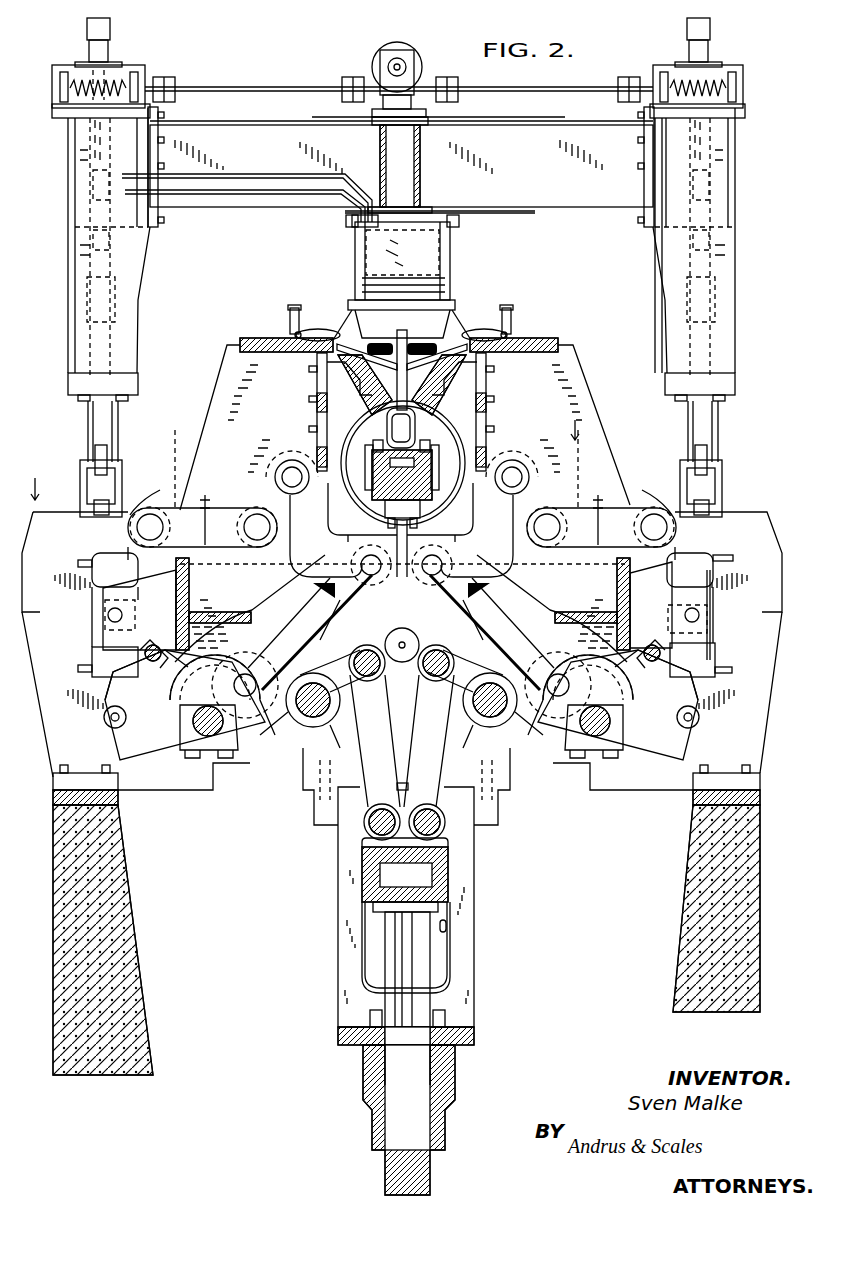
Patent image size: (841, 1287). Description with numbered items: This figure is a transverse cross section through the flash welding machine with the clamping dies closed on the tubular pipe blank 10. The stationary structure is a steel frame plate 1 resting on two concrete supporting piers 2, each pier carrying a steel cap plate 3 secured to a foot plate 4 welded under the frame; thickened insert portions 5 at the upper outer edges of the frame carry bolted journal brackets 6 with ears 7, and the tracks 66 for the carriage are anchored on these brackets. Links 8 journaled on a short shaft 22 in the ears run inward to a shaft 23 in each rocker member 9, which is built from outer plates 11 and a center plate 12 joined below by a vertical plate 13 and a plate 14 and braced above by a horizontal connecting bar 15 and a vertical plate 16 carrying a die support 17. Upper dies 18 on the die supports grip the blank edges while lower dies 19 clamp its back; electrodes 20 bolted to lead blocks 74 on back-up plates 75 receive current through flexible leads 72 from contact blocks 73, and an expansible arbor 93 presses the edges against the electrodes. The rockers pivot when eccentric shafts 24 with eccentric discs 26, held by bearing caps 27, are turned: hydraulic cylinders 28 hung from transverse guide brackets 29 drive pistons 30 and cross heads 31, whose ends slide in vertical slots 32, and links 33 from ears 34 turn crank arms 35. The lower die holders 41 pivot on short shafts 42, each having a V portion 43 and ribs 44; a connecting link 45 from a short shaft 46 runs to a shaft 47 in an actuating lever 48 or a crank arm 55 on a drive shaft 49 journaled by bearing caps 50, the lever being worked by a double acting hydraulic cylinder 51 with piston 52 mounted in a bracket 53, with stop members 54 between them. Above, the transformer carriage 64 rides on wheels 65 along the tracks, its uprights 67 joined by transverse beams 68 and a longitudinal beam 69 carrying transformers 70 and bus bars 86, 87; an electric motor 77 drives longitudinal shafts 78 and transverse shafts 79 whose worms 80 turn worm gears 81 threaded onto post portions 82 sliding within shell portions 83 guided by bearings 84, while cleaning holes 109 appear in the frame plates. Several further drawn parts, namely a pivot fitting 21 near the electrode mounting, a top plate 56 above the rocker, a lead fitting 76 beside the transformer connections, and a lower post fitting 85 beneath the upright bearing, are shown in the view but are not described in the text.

The frame plate 1 is at (50, 745).
The concrete supporting pier 2 is at (53, 855).
The steel cap plate 3 is at (53, 798).
The foot plate 4 is at (53, 780).
The insert portion 5 is at (40, 513).
The journal bracket 6 is at (323, 465).
The ear 7 is at (401, 489).
The link 8 is at (416, 506).
The rocker member 9 is at (222, 372).
The tubular pipe blank 10 is at (470, 470).
The outer plate 11 is at (285, 615).
The center plate 12 is at (700, 50).
The vertical plate 13 is at (172, 590).
The plate 14 is at (240, 612).
The horizontal connecting bar 15 is at (286, 336).
The vertical plate 16 is at (317, 385).
The die support 17 is at (322, 405).
The upper die 18 is at (322, 432).
The lower die 19 is at (338, 505).
The electrode 20 is at (388, 389).
The link 21 is at (315, 330).
The short shaft 22 is at (160, 525).
The shaft 23 is at (257, 522).
The eccentric shaft 24 is at (308, 714).
The eccentric disc 26 is at (405, 703).
The bearing cap 27 is at (367, 684).
The hydraulic cylinder 28 is at (455, 1085).
The transverse guide bracket 29 is at (474, 965).
The piston 30 is at (392, 1058).
The cross head 31 is at (450, 880).
The vertical slot 32 is at (446, 926).
The link 33 is at (402, 741).
The ear 34 is at (415, 815).
The crank arm 35 is at (386, 628).
The lower die holder 41 is at (288, 545).
The short shaft 42 is at (290, 477).
The V portion 43 is at (350, 535).
The rib 44 is at (401, 626).
The connecting link 45 is at (462, 596).
The short shaft 46 is at (361, 565).
The shaft 47 is at (245, 674).
The actuating lever 48 is at (398, 705).
The drive shaft 49 is at (196, 728).
The bearing cap 50 is at (195, 758).
The double acting hydraulic cylinder 51 is at (92, 636).
The piston 52 is at (108, 683).
The bracket 53 is at (190, 588).
The stop member 54 is at (163, 636).
The crank arm 55 is at (230, 662).
The plate 56 is at (250, 338).
The transformer carriage 64 is at (245, 121).
The wheel 65 is at (107, 452).
The track 66 is at (94, 508).
The upright 67 is at (68, 230).
The transverse beam 68 is at (525, 209).
The longitudinal beam 69 is at (420, 178).
The transformer 70 is at (355, 255).
The flexible lead 72 is at (402, 329).
The contact block 73 is at (352, 330).
The lead block 74 is at (359, 385).
The back-up plate 75 is at (444, 385).
The arm 76 is at (450, 330).
The electric motor 77 is at (378, 60).
The longitudinal shaft 78 is at (405, 62).
The transverse shaft 79 is at (288, 86).
The worm 80 is at (120, 80).
The worm gear 81 is at (72, 75).
The post portion 82 is at (120, 420).
The shell portion 83 is at (142, 312).
The bearing 84 is at (68, 385).
The bracket 85 is at (92, 482).
The bus bar 86 is at (268, 173).
The bus bar 87 is at (250, 192).
The expansible arbor 93 is at (375, 478).
The cleaning hole 109 is at (403, 650).